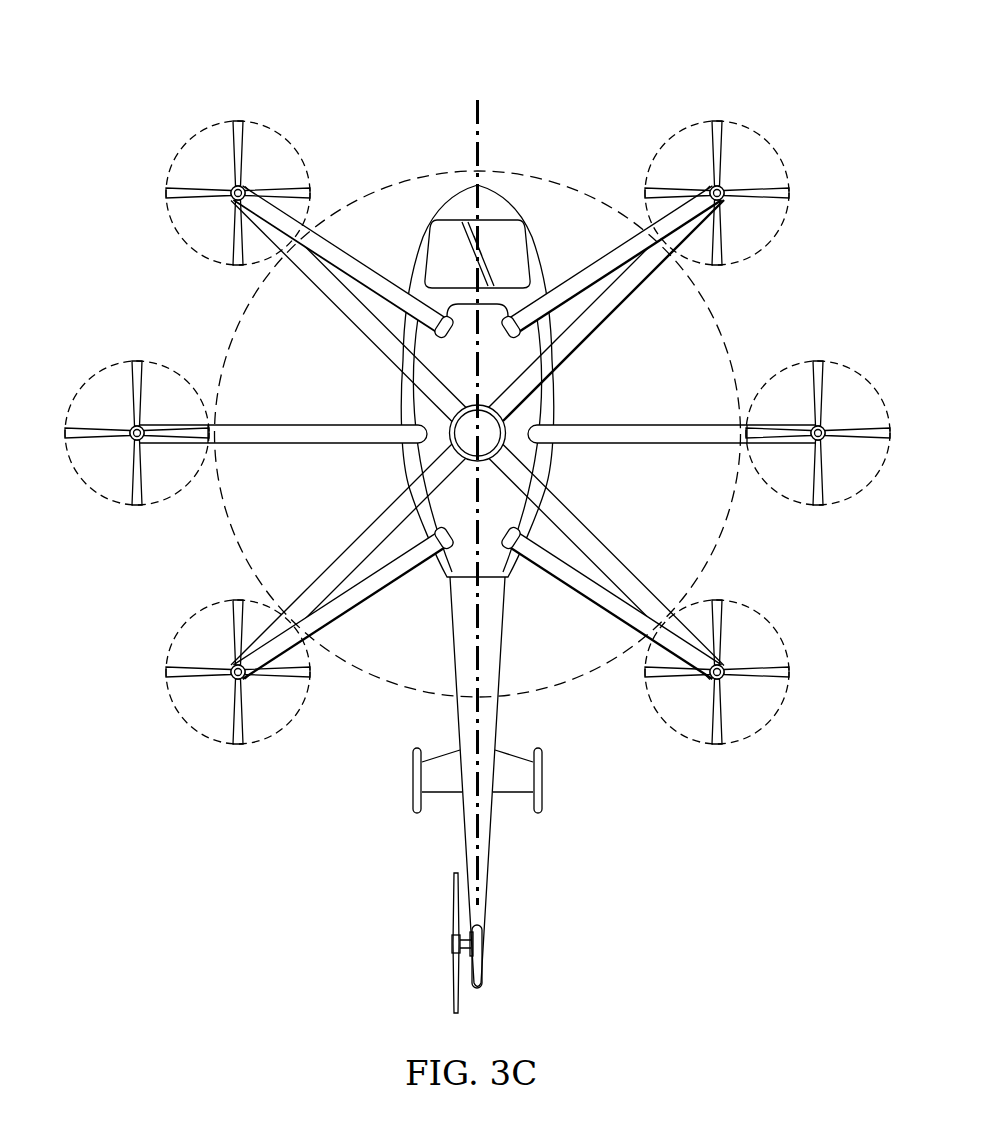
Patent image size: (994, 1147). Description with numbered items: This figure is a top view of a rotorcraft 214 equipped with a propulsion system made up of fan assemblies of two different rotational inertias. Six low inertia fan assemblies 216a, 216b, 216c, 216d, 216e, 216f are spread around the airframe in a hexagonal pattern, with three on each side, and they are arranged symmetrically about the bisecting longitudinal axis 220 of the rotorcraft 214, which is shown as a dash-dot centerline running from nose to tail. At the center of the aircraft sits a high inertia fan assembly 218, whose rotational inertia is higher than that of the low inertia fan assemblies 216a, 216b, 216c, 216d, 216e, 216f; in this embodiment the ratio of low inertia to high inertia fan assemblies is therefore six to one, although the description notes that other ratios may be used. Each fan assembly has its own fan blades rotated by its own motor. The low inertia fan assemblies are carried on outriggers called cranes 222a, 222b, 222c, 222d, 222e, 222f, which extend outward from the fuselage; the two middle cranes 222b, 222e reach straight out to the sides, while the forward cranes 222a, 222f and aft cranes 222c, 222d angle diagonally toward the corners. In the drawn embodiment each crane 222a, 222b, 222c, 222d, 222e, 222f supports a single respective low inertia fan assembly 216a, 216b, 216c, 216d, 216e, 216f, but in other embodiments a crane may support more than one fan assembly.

The rotorcraft 214 is at (320, 60).
The low inertia fan assembly 216a is at (221, 139).
The low inertia fan assembly 216b is at (121, 380).
The low inertia fan assembly 216c is at (221, 622).
The low inertia fan assembly 216d is at (734, 622).
The low inertia fan assembly 216e is at (834, 380).
The low inertia fan assembly 216f is at (734, 139).
The high inertia fan assembly 218 is at (603, 346).
The bisecting longitudinal axis 220 is at (482, 115).
The crane 222a is at (364, 268).
The crane 222b is at (313, 447).
The crane 222c is at (374, 600).
The crane 222d is at (583, 600).
The crane 222e is at (645, 447).
The crane 222f is at (583, 268).